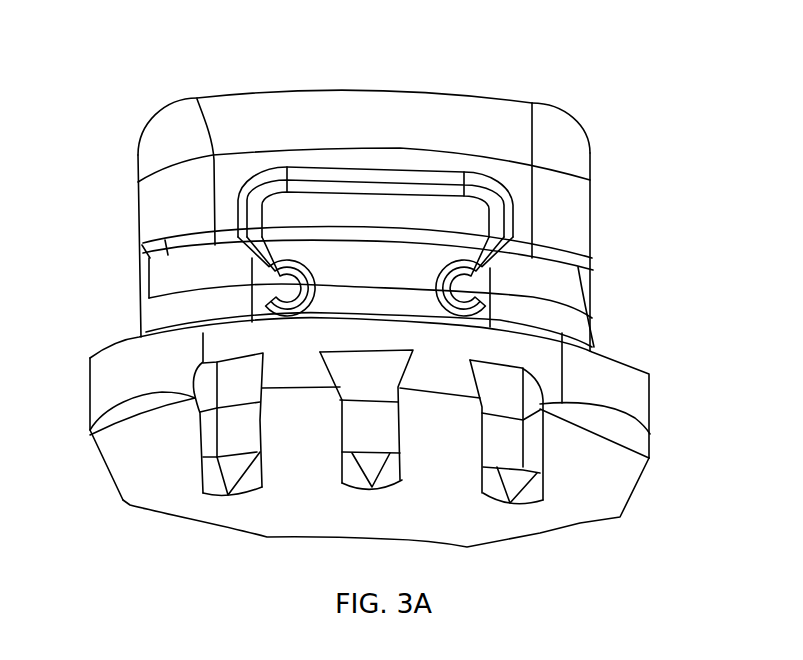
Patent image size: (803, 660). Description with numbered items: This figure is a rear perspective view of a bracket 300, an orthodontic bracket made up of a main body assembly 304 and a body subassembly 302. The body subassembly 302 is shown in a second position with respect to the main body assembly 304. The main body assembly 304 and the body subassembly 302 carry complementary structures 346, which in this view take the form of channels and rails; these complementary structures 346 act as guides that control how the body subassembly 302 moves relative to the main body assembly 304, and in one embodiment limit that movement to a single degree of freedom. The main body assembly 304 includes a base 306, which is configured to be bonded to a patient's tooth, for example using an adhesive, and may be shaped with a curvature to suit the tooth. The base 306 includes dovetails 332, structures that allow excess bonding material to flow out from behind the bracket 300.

The bracket 300 is at (100, 68).
The body subassembly 302 is at (593, 218).
The main body assembly 304 is at (88, 385).
The base 306 is at (256, 535).
The dovetails 332 is at (523, 512).
The complementary structures 346 is at (253, 277).